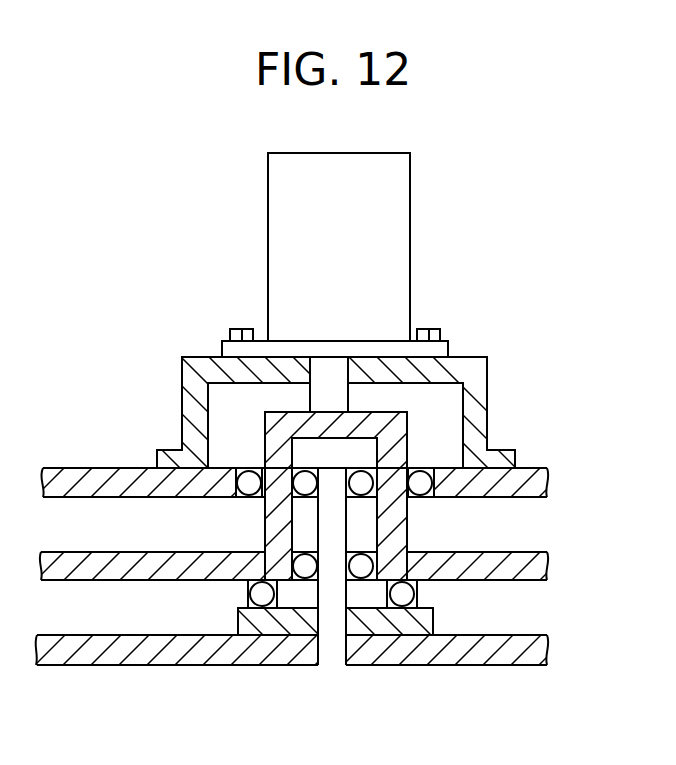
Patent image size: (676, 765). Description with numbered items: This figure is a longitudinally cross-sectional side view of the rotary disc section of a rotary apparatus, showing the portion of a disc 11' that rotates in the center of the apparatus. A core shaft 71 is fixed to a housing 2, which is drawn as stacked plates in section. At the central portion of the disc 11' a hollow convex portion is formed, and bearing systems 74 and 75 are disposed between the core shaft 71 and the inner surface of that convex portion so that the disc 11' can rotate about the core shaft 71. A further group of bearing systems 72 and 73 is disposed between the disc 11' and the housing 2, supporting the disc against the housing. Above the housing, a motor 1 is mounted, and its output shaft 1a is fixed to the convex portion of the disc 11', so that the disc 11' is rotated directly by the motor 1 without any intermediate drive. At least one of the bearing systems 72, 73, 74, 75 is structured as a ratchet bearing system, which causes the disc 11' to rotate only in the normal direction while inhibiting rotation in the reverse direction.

The motor 1 is at (398, 243).
The output shaft 1a is at (337, 382).
The housing 2 is at (94, 480).
The disc 11' is at (546, 519).
The core shaft 71 is at (335, 650).
The bearing system 72 is at (250, 483).
The bearing system 73 is at (262, 593).
The bearing system 74 is at (363, 480).
The bearing system 75 is at (362, 565).